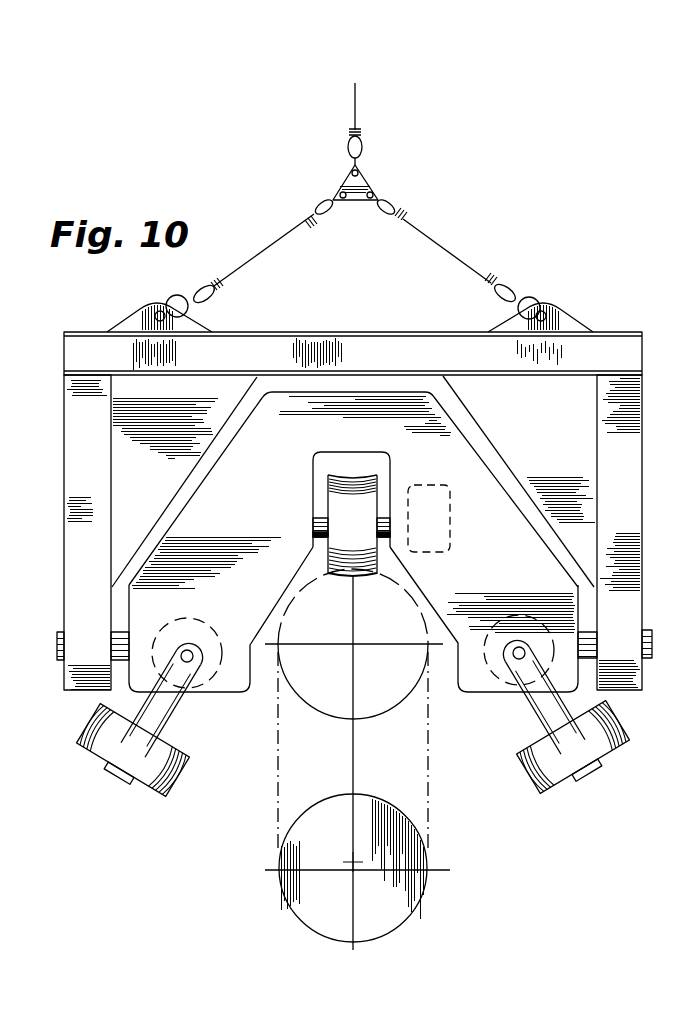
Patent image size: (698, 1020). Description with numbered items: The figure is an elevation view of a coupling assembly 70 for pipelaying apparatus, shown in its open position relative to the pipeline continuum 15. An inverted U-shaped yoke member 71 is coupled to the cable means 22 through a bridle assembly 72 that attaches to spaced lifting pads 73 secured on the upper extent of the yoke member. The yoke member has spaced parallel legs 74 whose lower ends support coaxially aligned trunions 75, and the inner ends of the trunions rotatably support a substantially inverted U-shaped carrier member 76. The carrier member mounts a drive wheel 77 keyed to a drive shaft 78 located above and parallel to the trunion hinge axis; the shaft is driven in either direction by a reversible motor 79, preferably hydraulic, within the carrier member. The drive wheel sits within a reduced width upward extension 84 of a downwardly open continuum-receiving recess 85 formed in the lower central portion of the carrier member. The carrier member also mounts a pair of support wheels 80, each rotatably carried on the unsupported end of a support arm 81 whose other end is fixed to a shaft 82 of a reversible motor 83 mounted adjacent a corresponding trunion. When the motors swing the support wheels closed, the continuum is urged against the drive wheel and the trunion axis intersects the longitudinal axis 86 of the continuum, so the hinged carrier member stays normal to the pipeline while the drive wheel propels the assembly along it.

The pipeline continuum 15 is at (412, 905).
The cable means 22 is at (358, 118).
The coupling assembly 70 is at (497, 243).
The yoke member 71 is at (647, 353).
The bridle assembly 72 is at (424, 226).
The lifting pads 73 is at (148, 307).
The legs 74 is at (65, 588).
The trunions 75 is at (58, 662).
The carrier member 76 is at (537, 560).
The drive wheel 77 is at (355, 490).
The drive shaft 78 is at (384, 518).
The reversible motor 79 is at (452, 540).
The support wheels 80 is at (178, 774).
The support arm 81 is at (168, 702).
The shaft 82 is at (192, 666).
The reversible motor 83 is at (582, 614).
The upward extension 84 is at (317, 462).
The continuum-receiving recess 85 is at (260, 677).
The longitudinal axis 86 is at (350, 870).